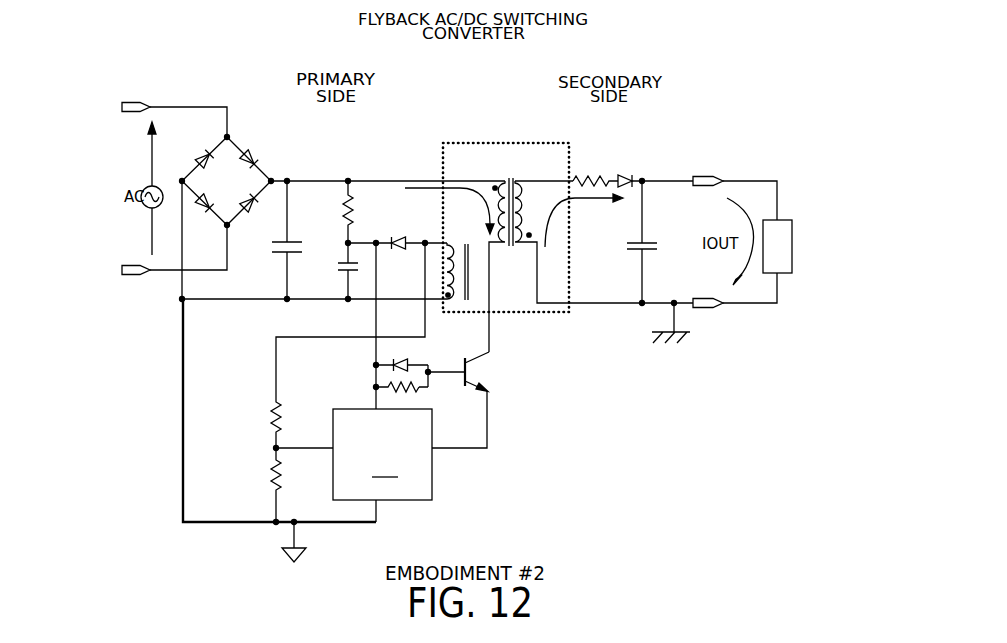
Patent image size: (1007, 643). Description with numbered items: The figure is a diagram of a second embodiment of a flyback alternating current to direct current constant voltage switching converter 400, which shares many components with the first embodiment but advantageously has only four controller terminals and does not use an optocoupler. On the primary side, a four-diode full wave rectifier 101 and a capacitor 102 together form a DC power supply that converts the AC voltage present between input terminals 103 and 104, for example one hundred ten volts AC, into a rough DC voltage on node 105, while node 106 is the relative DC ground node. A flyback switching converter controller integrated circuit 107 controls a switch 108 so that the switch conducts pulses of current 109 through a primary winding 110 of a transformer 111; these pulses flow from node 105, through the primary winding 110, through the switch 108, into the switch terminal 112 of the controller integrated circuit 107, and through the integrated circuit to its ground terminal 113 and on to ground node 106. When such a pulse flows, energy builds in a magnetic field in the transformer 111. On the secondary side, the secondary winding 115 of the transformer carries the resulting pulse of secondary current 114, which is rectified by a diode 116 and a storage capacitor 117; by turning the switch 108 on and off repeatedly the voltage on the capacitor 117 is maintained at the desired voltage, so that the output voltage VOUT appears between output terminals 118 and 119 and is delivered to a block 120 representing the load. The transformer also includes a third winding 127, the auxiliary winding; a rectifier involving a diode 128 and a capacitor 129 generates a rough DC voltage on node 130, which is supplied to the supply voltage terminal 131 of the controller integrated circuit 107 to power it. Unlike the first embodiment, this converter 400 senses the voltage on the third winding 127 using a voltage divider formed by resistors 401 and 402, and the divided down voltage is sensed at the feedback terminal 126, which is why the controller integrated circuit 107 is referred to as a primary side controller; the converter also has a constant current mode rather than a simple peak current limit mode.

The flyback AC/DC switching converter 400 is at (485, 75).
The four-diode full wave rectifier 101 is at (252, 133).
The capacitor 102 is at (278, 256).
The input terminal 103 is at (134, 102).
The input terminal 104 is at (134, 262).
The node 105 is at (317, 177).
The ground node 106 is at (313, 302).
The controller integrated circuit 107 is at (382, 454).
The switch 108 is at (477, 372).
The pulses of current 109 is at (461, 190).
The primary winding 110 is at (508, 247).
The transformer 111 is at (457, 141).
The switch terminal 112 is at (436, 451).
The ground terminal 113 is at (381, 508).
The secondary current 114 is at (592, 199).
The secondary winding Ls 115 is at (523, 177).
The diode 116 is at (623, 172).
The storage capacitor 117 is at (627, 246).
The output terminal 118 is at (698, 189).
The output terminal 119 is at (697, 298).
The load 120 is at (789, 219).
The feedback terminal 126 is at (329, 451).
The third winding 127 is at (447, 283).
The diode 128 is at (401, 232).
The capacitor 129 is at (338, 267).
The node 130 is at (342, 245).
The supply voltage terminal 131 is at (369, 403).
The resistor 401 is at (264, 417).
The resistor 402 is at (264, 475).